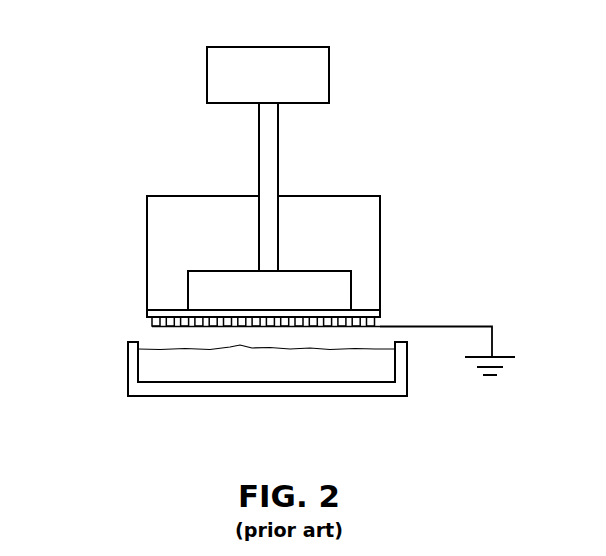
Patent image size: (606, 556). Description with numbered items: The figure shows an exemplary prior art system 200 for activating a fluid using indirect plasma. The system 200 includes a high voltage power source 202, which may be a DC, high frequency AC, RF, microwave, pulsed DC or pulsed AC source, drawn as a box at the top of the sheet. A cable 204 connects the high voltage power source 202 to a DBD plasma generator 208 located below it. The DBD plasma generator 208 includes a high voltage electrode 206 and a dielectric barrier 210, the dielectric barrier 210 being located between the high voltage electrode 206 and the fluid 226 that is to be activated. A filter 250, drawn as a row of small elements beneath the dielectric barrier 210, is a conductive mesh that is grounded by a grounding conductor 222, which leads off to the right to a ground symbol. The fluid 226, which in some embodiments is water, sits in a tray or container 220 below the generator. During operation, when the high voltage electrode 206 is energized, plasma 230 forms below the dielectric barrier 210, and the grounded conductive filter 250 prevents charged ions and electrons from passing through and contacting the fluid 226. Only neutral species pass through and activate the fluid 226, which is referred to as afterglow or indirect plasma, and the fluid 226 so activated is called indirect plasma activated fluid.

The system 200 is at (487, 152).
The high voltage power source 202 is at (329, 47).
The cable 204 is at (278, 152).
The high voltage electrode 206 is at (351, 283).
The DBD plasma generator 208 is at (378, 230).
The dielectric barrier 210 is at (378, 308).
The tray/bath 220 is at (128, 362).
The grounding conductor 222 is at (492, 342).
The fluid 226 is at (259, 361).
The plasma 230 is at (180, 327).
The filter 250 is at (152, 323).